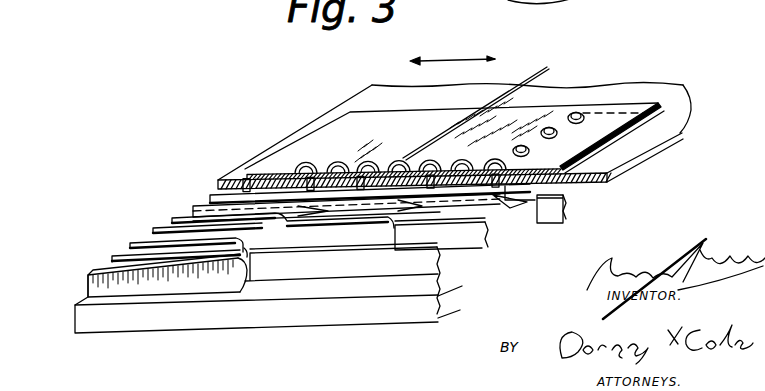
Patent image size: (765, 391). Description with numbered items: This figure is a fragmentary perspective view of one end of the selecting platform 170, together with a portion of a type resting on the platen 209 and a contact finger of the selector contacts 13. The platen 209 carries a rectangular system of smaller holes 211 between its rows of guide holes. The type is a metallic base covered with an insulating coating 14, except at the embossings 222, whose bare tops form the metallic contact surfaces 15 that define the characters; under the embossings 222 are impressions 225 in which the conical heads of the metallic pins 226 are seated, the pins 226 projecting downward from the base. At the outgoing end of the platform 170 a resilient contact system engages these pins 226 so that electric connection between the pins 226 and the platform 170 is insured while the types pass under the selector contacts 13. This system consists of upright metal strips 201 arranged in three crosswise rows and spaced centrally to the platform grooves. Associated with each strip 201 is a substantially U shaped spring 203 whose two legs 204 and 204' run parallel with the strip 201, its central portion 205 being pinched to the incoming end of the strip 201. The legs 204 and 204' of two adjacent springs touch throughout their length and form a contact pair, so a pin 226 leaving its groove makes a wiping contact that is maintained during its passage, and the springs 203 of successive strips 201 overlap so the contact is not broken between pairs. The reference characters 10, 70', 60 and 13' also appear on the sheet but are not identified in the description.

The apparatus 10 is at (30, 5).
The element 70' is at (557, 10).
The element 60 is at (665, 4).
The selector contacts 13 is at (454, 104).
The plate portion 13' is at (396, 127).
The insulating coating 14 is at (272, 168).
The metallic contact surfaces 15 is at (577, 118).
The platform 170 is at (323, 317).
The upright metal strips 201 is at (112, 256).
The U shaped spring 203 is at (88, 287).
The spring leg 204 is at (175, 257).
The spring leg 204' is at (253, 213).
The central portion of spring 205 is at (523, 210).
The platen 209 is at (644, 151).
The smaller holes 211 is at (562, 182).
The embossings 222 is at (552, 130).
The impressions 225 is at (330, 164).
The metallic pins 226 is at (490, 183).